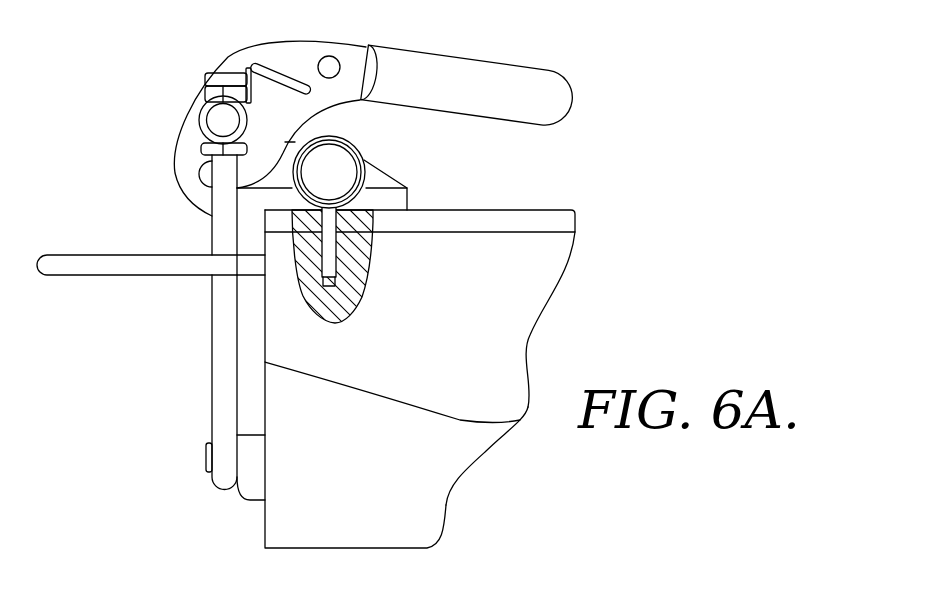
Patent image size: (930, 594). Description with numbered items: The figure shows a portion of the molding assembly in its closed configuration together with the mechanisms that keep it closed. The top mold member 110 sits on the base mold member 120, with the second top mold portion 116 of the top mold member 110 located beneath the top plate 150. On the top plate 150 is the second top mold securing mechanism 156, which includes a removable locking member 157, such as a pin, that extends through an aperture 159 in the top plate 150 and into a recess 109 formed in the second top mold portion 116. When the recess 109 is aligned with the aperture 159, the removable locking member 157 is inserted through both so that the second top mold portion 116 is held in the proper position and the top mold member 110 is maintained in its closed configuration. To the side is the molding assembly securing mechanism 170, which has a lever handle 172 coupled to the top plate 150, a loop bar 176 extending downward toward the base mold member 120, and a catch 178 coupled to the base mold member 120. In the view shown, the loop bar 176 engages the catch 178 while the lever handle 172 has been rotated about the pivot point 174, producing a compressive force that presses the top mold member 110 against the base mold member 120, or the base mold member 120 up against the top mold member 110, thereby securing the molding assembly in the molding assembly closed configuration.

The recess 109 is at (366, 303).
The top mold member 110 is at (526, 351).
The second top mold portion 116 is at (555, 270).
The base mold member 120 is at (436, 494).
The top plate 150 is at (577, 223).
The second top mold securing mechanism 156 is at (365, 153).
The removable locking member 157 is at (301, 138).
The aperture 159 is at (352, 225).
The molding assembly securing mechanism 170 is at (124, 103).
The lever handle 172 is at (283, 48).
The pivot point 174 is at (331, 56).
The loop bar 176 is at (212, 233).
The catch 178 is at (252, 493).